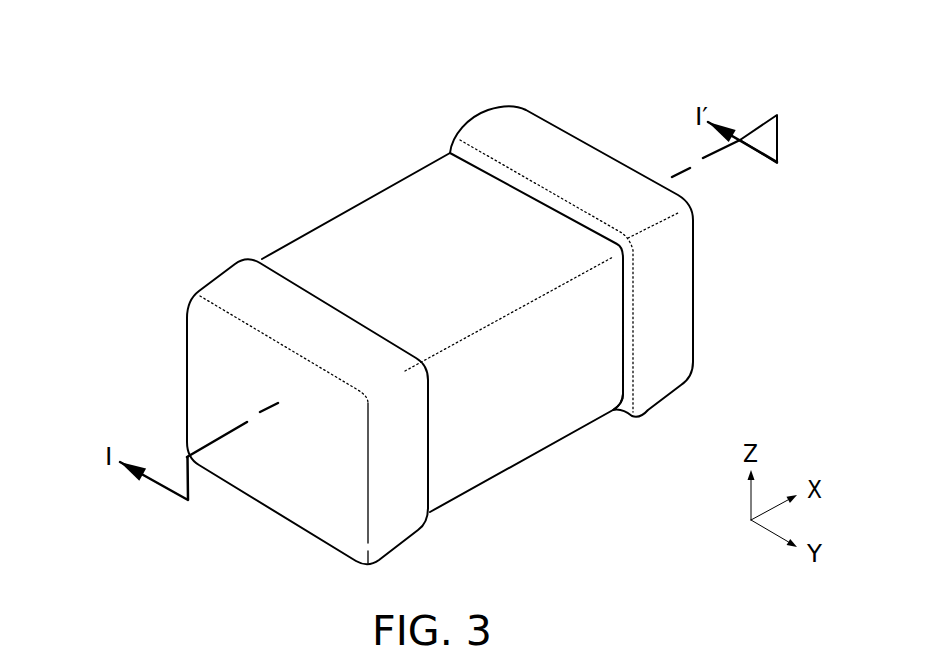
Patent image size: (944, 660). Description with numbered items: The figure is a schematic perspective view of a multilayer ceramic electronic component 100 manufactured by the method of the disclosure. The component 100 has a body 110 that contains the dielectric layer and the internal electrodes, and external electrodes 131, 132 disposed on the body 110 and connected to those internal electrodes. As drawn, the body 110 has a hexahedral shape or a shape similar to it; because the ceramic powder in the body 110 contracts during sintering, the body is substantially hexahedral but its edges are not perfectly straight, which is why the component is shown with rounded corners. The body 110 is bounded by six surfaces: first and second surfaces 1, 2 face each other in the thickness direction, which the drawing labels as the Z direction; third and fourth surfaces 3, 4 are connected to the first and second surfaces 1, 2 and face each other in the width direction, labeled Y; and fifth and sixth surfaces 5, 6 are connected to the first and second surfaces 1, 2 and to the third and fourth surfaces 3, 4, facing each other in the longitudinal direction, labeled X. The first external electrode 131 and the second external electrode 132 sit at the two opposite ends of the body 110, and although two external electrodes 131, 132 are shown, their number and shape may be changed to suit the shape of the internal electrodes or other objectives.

The multilayer ceramic electronic component 100 is at (316, 33).
The body 110 is at (380, 213).
The first external electrode 131 is at (225, 280).
The second external electrode 132 is at (488, 128).
The first surface 1 is at (469, 450).
The second surface 2 is at (424, 195).
The third surface 3 is at (254, 484).
The fourth surface 4 is at (665, 304).
The fifth surface 5 is at (548, 424).
The sixth surface 6 is at (350, 254).